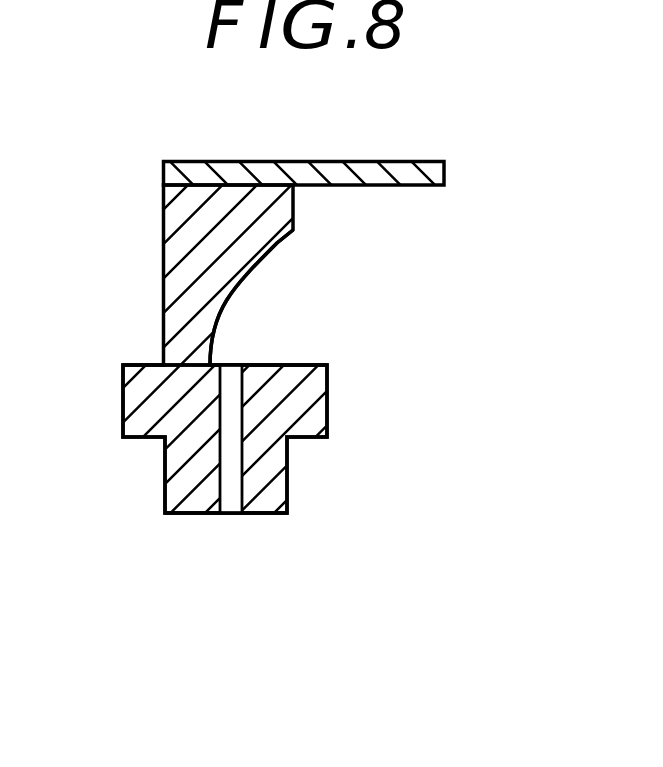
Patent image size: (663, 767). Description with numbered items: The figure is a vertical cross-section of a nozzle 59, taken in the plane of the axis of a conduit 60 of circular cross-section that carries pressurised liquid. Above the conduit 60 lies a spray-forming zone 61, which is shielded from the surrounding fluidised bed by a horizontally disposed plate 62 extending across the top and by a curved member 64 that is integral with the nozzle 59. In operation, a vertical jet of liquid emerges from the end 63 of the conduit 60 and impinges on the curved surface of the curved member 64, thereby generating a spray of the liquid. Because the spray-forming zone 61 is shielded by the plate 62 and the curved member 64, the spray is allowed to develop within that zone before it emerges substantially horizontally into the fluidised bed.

The nozzle 59 is at (331, 354).
The conduit 60 is at (227, 380).
The spray-forming zone 61 is at (300, 343).
The horizontally disposed plate 62 is at (428, 164).
The end of conduit 63 is at (238, 411).
The curved member 64 is at (238, 262).